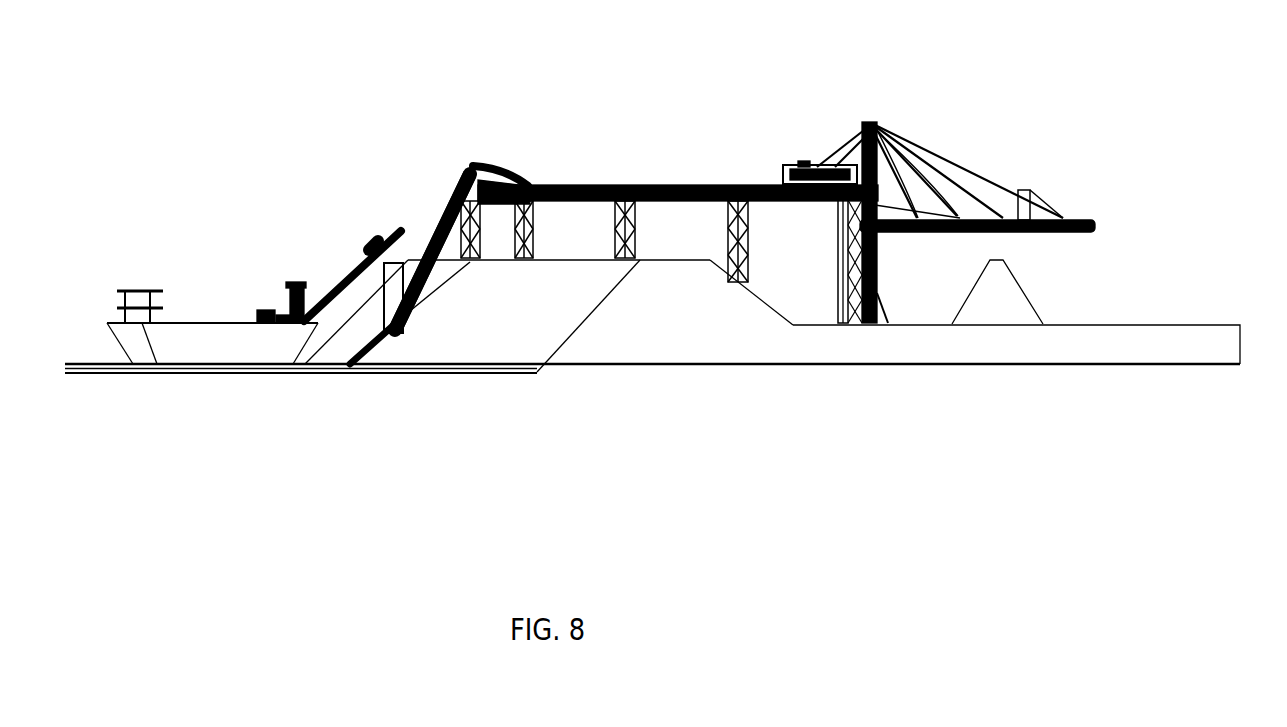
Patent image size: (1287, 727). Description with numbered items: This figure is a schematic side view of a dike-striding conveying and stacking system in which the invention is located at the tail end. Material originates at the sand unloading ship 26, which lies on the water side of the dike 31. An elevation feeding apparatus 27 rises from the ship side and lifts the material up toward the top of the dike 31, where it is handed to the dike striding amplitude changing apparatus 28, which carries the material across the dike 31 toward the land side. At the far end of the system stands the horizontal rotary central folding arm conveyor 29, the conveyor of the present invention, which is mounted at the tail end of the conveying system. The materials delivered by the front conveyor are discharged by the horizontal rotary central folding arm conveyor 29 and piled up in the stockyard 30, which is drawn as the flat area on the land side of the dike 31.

The sand unloading ship 26 is at (333, 278).
The elevation feeding apparatus 27 is at (453, 177).
The dike striding amplitude changing apparatus 28 is at (497, 167).
The horizontal rotary central folding arm conveyor 29 is at (948, 172).
The stockyard 30 is at (1100, 322).
The dike 31 is at (623, 313).